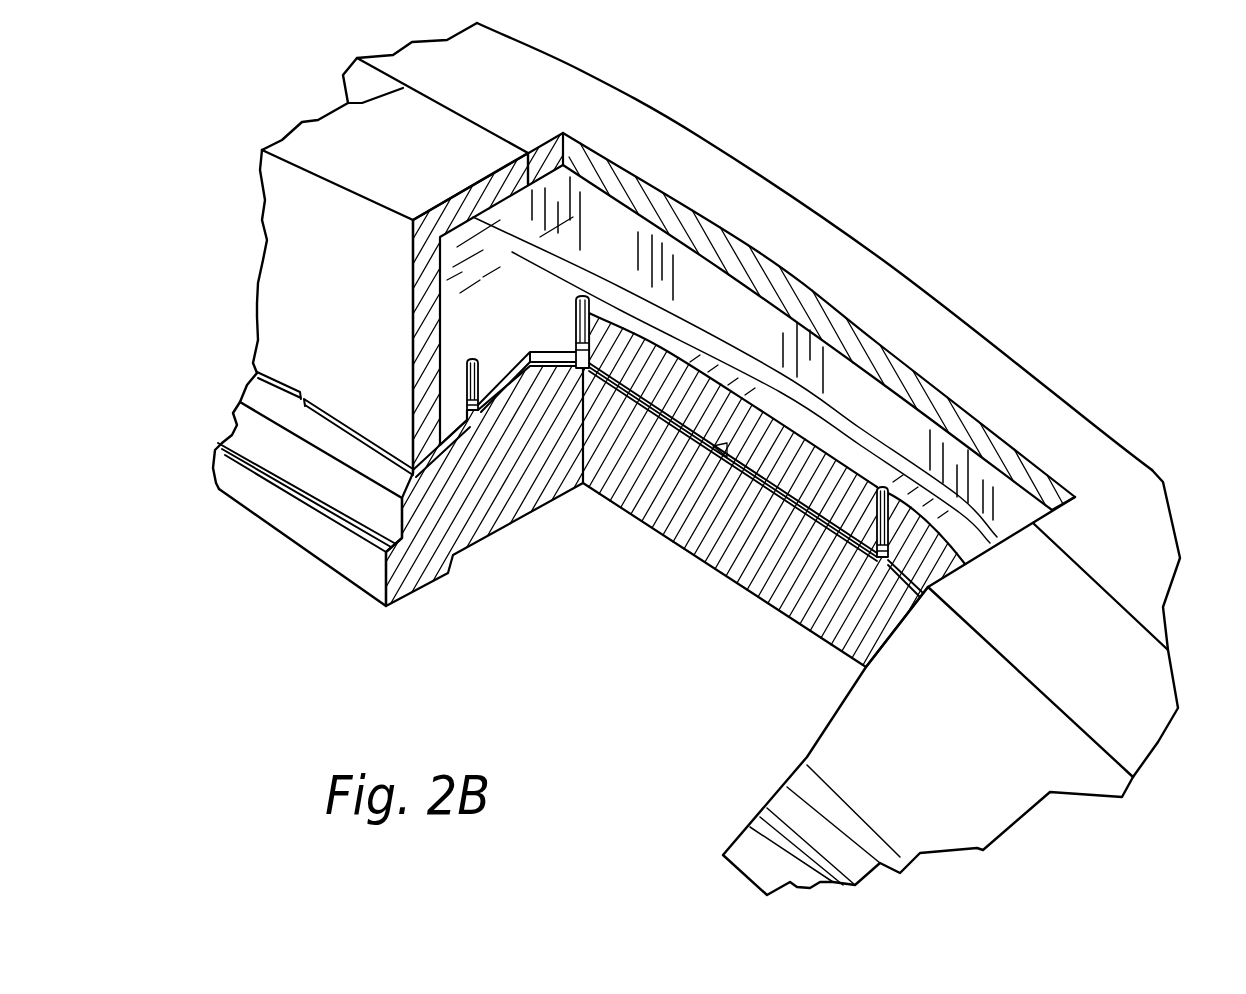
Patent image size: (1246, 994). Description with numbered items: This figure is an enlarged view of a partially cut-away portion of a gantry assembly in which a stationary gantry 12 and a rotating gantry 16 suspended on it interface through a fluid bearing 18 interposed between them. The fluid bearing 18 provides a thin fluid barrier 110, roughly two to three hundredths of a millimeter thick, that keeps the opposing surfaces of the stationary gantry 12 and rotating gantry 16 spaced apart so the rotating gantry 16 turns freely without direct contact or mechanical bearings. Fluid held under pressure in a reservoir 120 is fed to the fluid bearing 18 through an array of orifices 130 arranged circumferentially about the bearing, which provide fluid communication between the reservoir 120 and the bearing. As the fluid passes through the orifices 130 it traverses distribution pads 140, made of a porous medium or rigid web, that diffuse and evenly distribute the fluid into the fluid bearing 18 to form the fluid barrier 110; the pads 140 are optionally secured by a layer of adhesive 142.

The stationary gantry 12 is at (1085, 663).
The rotating gantry 16 is at (833, 617).
The fluid bearing 18 is at (416, 483).
The fluid barrier 110 is at (495, 403).
The reservoir 120 is at (522, 245).
The orifices 130 is at (470, 360).
The distribution pads 140 is at (820, 527).
The layer of adhesive 142 is at (773, 483).